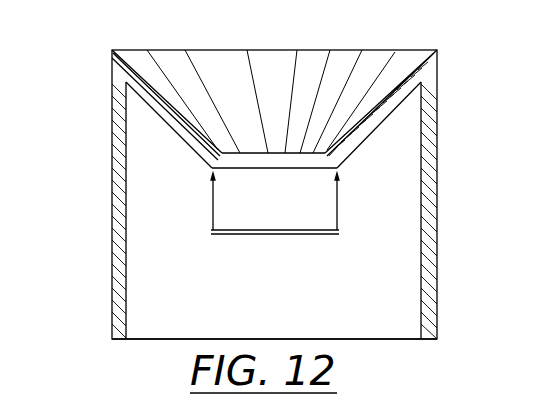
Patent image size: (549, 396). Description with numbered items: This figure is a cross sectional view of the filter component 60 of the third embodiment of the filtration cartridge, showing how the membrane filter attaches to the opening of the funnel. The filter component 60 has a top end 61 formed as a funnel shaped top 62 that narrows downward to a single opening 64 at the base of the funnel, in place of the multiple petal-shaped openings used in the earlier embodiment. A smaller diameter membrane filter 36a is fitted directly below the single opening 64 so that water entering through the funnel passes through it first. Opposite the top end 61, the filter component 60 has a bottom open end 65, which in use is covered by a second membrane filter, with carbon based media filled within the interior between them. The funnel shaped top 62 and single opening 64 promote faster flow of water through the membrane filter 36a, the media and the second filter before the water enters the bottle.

The filter component 60 is at (438, 200).
The top end 61 is at (112, 50).
The funnel shaped top 62 is at (228, 88).
The single opening 64 is at (297, 152).
The membrane filter 36a is at (260, 235).
The bottom open end 65 is at (350, 341).